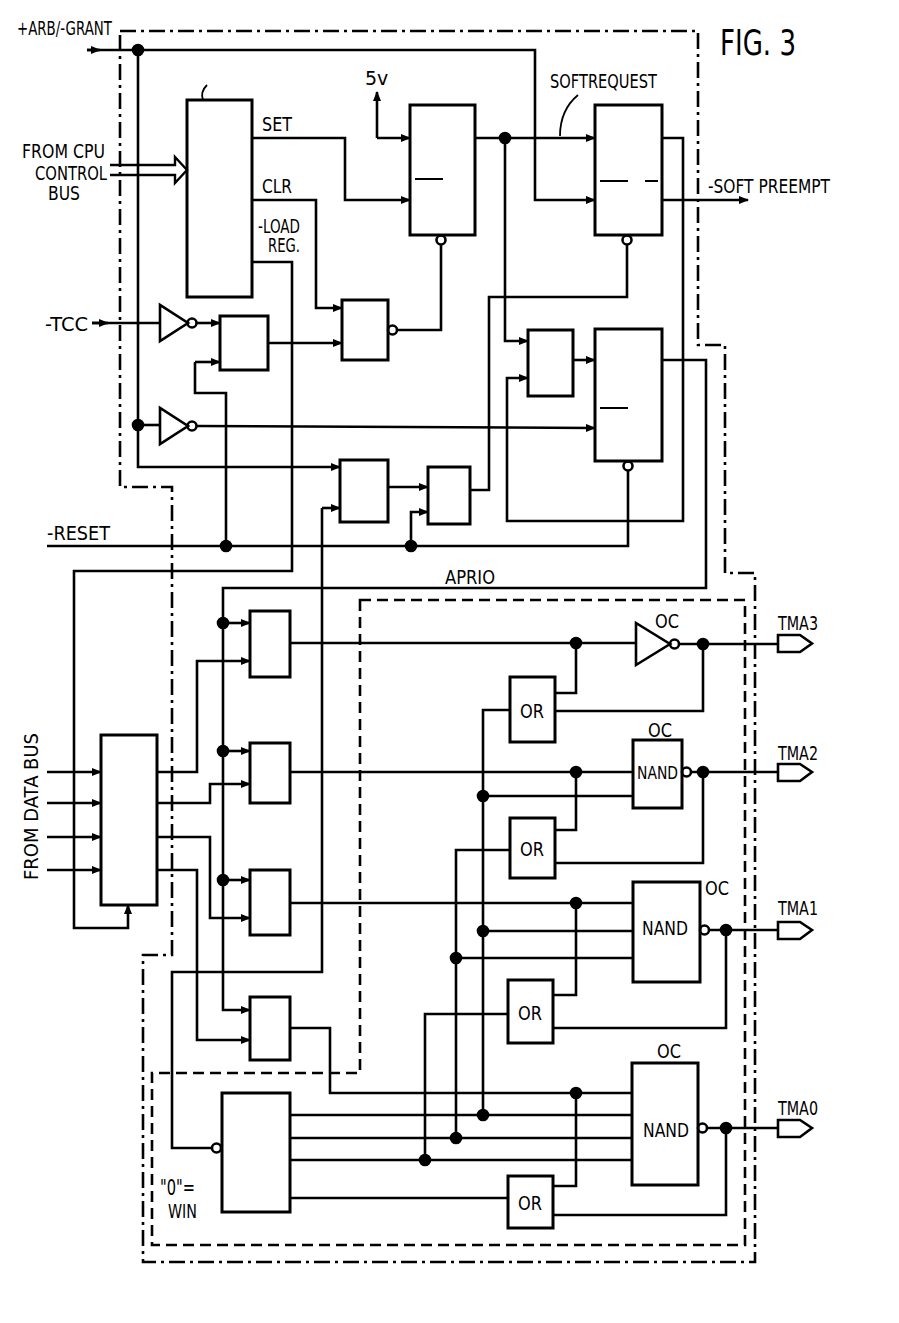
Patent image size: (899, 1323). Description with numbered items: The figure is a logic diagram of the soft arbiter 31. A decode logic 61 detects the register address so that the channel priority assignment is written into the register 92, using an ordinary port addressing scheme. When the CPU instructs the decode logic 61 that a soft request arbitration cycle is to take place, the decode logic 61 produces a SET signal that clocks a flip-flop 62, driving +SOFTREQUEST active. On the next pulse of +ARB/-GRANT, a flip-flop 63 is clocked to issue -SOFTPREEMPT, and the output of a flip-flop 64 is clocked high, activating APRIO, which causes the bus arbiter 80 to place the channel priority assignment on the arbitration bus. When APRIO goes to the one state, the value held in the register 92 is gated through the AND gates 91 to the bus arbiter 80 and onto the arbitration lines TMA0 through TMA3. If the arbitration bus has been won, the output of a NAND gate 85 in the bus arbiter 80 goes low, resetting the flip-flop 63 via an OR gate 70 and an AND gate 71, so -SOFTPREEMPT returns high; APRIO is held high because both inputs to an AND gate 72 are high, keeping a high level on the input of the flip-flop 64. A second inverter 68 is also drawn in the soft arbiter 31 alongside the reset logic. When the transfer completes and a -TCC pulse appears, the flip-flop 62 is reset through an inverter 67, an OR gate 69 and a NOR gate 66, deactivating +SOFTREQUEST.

The soft arbiter 31 is at (725, 345).
The decode logic 61 is at (187, 122).
The flip-flop 62 is at (440, 105).
The flip-flop 63 is at (662, 118).
The flip-flop 64 is at (630, 329).
The NOR gate 66 is at (357, 302).
The inverter 67 is at (170, 305).
The inverter 68 is at (170, 408).
The OR gate 69 is at (266, 372).
The OR gate 70 is at (351, 460).
The AND gate 71 is at (438, 467).
The AND gate 72 is at (540, 332).
The bus arbiter 80 is at (538, 600).
The NAND gate 85 is at (292, 1190).
The AND gates 91 is at (288, 611).
The register 92 is at (155, 735).